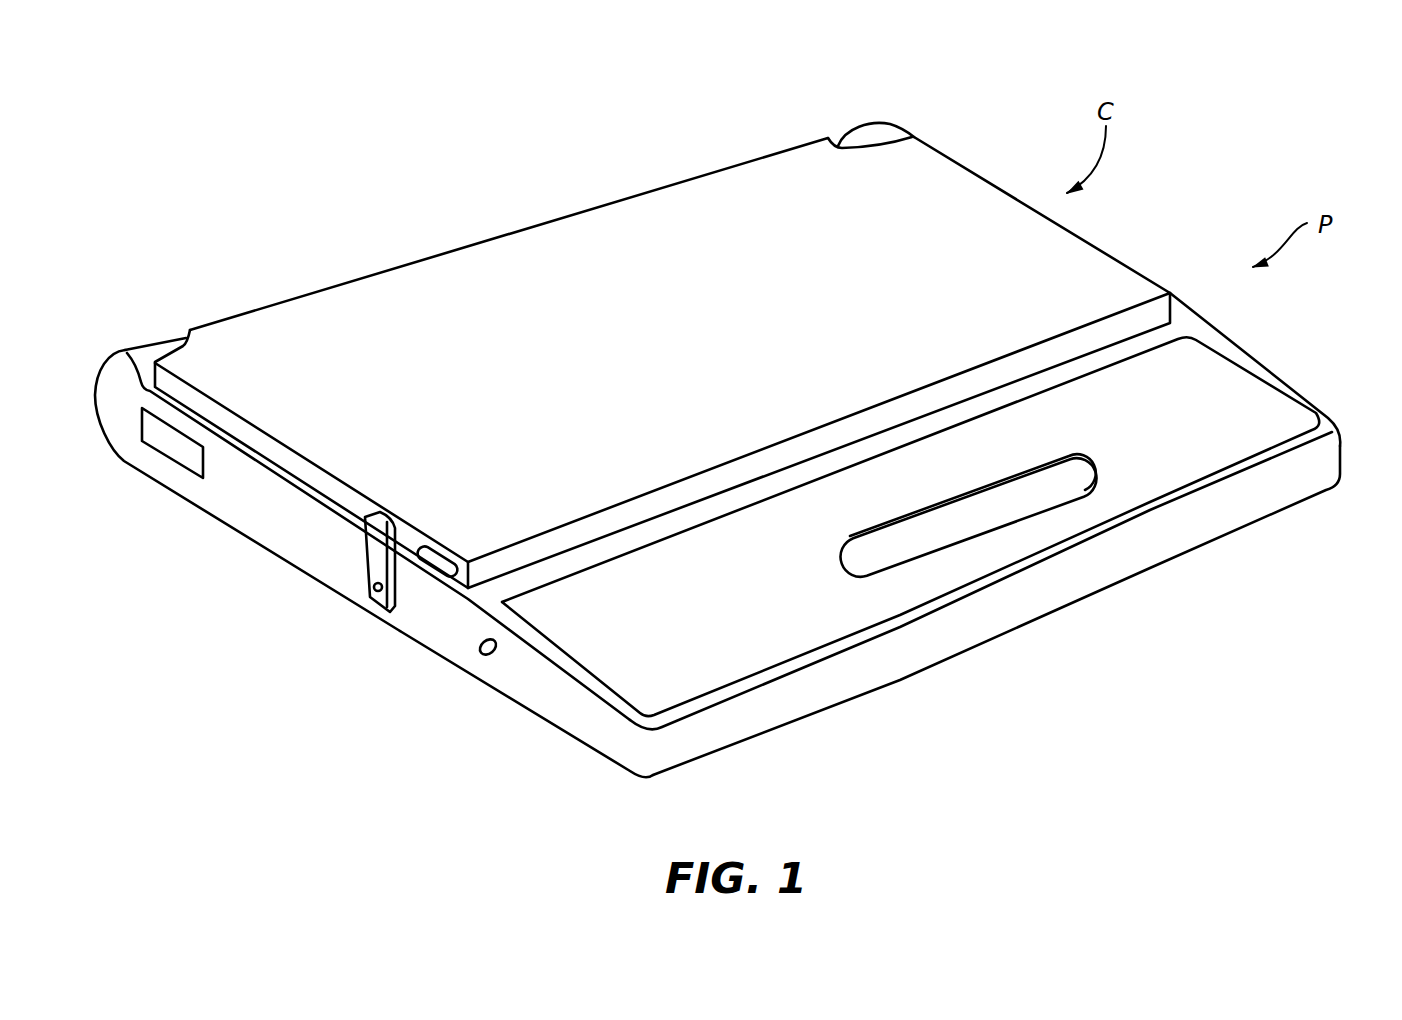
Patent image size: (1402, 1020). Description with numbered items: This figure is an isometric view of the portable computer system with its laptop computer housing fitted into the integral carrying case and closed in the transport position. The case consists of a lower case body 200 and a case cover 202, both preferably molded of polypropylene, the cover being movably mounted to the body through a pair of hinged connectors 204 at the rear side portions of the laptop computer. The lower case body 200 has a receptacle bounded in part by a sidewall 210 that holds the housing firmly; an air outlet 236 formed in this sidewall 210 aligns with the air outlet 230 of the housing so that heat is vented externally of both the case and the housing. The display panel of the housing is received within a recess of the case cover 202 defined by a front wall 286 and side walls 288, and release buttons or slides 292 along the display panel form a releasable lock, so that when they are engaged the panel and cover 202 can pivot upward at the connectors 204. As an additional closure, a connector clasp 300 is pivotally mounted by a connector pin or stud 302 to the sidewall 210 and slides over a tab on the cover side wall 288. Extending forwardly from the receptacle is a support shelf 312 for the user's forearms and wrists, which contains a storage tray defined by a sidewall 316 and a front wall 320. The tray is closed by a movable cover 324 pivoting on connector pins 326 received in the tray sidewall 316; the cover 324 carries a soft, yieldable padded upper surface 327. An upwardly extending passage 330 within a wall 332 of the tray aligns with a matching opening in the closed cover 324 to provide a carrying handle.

The lower case body 200 is at (449, 662).
The case cover 202 is at (643, 327).
The hinged connectors 204 is at (837, 142).
The sidewall 210 is at (317, 547).
The air outlet 230 is at (170, 440).
The air outlet 236 is at (180, 453).
The front wall 286 is at (1097, 333).
The side wall 288 is at (327, 487).
The release mechanism buttons or slides 292 is at (432, 565).
The connector clasp 300 is at (377, 567).
The connector pin or stud 302 is at (372, 597).
The support shelf 312 is at (1310, 392).
The sidewall 316 is at (526, 714).
The front wall 320 is at (1042, 603).
The movable cover 324 is at (1217, 387).
The connector pins 326 is at (488, 656).
The work surface 327 is at (713, 615).
The interior opening or passage 330 is at (1060, 488).
The upwardly extending wall 332 is at (900, 547).